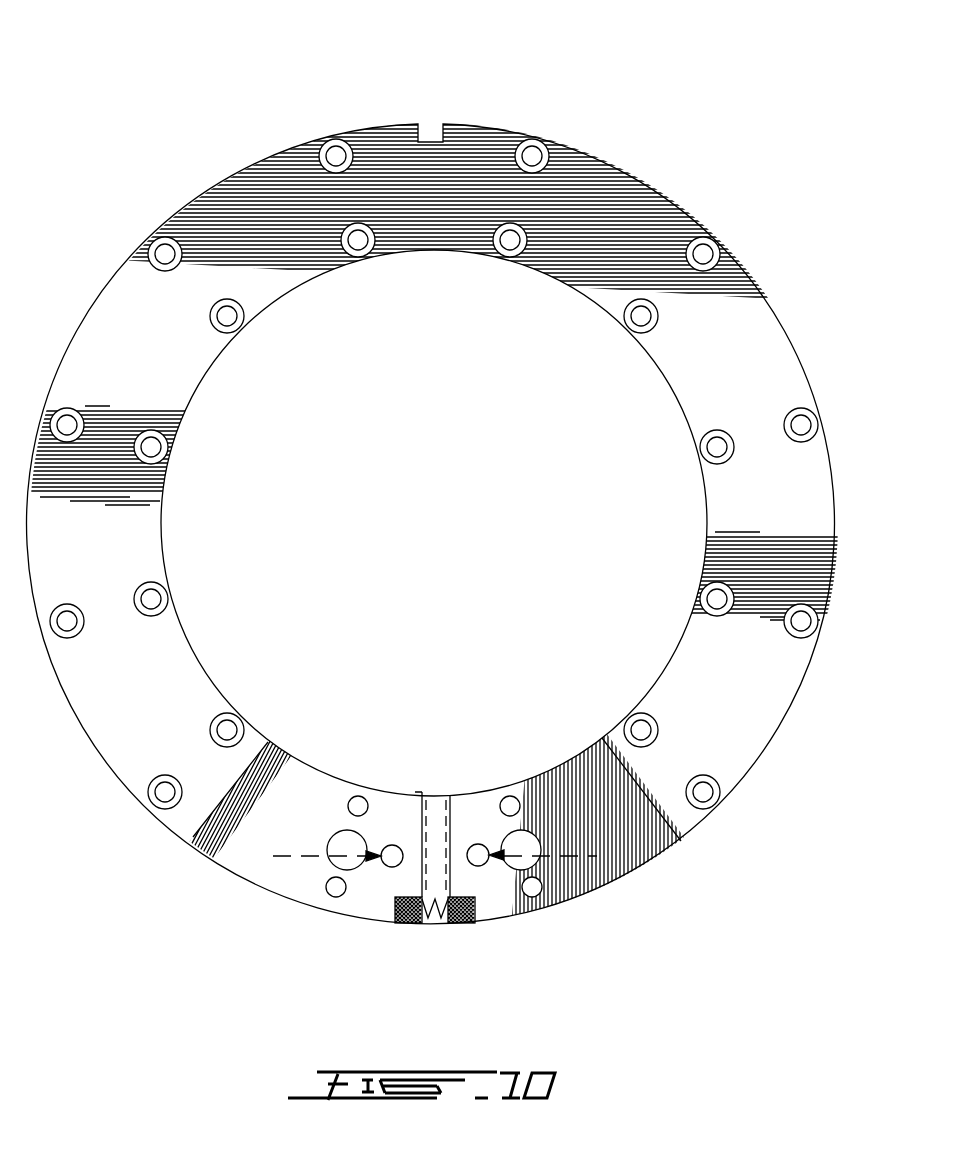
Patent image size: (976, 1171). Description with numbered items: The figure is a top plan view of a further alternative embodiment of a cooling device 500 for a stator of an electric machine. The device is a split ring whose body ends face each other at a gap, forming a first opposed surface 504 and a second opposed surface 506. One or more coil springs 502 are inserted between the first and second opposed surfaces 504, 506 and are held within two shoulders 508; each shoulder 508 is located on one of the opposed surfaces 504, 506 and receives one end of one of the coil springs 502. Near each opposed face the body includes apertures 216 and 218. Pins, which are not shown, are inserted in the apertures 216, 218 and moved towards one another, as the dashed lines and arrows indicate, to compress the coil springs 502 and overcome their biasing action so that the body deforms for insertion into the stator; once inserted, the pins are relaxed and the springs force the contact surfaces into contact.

The cooling device 500 is at (88, 170).
The coil springs 502 is at (435, 915).
The first opposed surface 504 is at (426, 852).
The second opposed surface 506 is at (440, 812).
The shoulders 508 is at (407, 928).
The aperture 216 is at (390, 845).
The aperture 218 is at (489, 840).